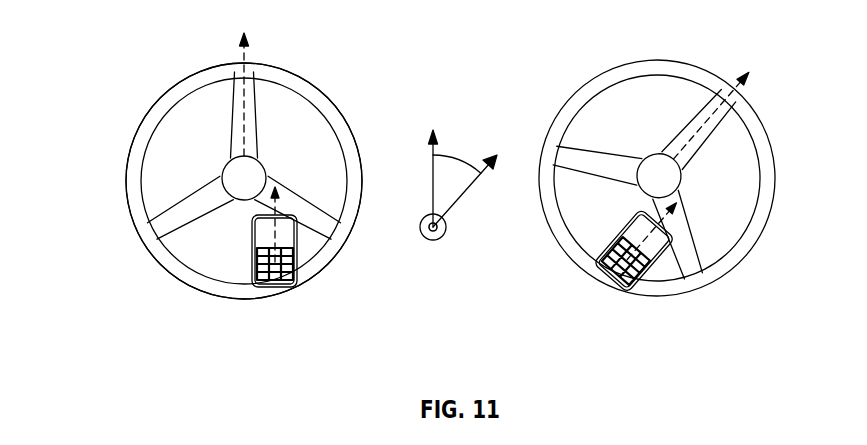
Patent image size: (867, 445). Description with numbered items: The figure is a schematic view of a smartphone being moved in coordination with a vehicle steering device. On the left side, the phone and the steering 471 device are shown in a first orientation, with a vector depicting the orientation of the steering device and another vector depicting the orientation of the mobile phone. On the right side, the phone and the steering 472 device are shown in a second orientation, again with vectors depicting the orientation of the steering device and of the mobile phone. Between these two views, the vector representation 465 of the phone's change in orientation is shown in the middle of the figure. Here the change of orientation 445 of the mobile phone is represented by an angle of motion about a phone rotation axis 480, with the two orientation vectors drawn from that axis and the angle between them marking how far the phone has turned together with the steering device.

The change of orientation of the mobile phone 445 is at (458, 155).
The vector representation of the phone's change in orientation 465 is at (448, 203).
The steering device in first orientation (left side) 471 is at (244, 184).
The steering device in second orientation (right side) 472 is at (664, 172).
The phone rotation axis 480 is at (423, 237).